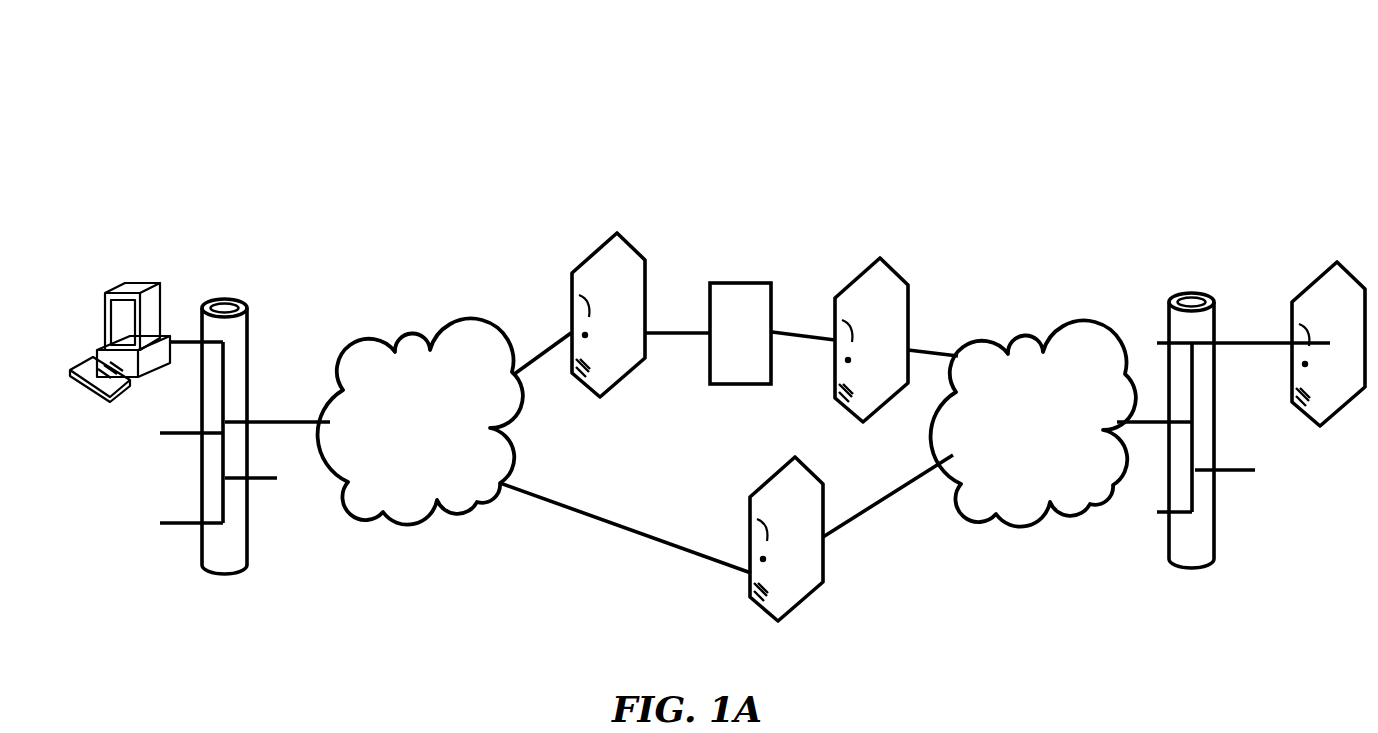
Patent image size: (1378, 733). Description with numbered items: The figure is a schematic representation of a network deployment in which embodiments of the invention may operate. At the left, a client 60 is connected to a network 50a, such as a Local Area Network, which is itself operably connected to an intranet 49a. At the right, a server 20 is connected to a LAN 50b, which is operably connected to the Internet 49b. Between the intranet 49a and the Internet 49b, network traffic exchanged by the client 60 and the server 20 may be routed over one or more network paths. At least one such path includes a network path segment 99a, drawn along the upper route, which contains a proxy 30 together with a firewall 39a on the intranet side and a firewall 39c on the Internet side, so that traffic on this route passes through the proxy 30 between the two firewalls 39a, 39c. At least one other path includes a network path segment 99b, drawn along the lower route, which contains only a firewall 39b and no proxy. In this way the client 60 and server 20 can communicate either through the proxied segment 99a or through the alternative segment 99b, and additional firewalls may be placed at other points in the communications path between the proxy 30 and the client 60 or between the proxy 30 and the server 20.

The server 20 is at (1317, 278).
The proxy 30 is at (738, 282).
The firewall 39a is at (577, 297).
The firewall 39b is at (813, 590).
The firewall 39c is at (873, 307).
The intranet 49a is at (417, 340).
The Internet 49b is at (1050, 348).
The network 50a is at (213, 303).
The LAN 50b is at (1190, 293).
The client 60 is at (103, 333).
The network path segment 99a is at (719, 132).
The network path segment 99b is at (586, 556).